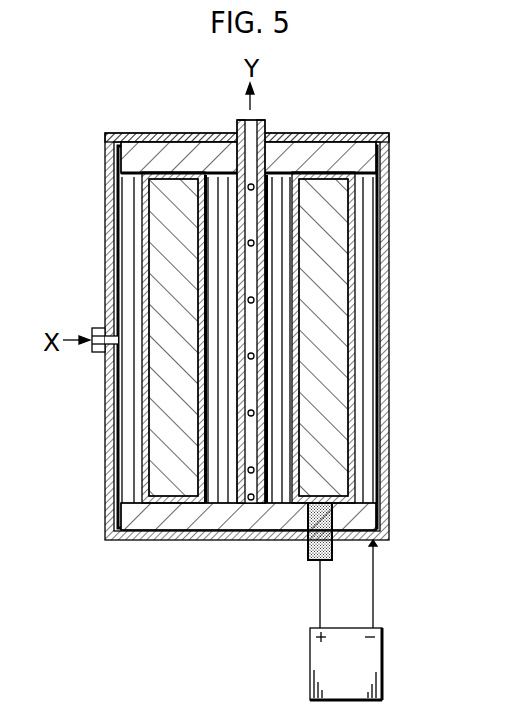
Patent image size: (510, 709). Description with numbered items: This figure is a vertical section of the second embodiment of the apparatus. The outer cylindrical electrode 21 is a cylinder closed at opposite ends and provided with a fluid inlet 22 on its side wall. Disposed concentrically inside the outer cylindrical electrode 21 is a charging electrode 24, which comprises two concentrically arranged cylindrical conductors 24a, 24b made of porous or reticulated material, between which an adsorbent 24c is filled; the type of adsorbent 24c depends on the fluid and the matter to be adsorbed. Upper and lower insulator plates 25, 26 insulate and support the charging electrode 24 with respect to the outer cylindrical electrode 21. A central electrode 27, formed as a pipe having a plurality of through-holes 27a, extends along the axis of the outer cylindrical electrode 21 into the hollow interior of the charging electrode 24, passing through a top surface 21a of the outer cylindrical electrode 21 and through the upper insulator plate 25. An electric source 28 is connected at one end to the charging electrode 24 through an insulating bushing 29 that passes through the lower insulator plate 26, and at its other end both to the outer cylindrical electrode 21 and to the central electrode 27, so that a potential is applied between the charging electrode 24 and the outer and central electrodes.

The outer cylindrical electrode 21 is at (390, 245).
The top surface 21a is at (300, 135).
The fluid inlet 22 is at (100, 329).
The charging electrode 24 is at (306, 337).
The cylindrical conductor 24a is at (348, 363).
The cylindrical conductor 24b is at (283, 398).
The adsorbent 24c is at (345, 437).
The upper insulator plate 25 is at (372, 163).
The lower insulator plate 26 is at (367, 513).
The central electrode 27 is at (238, 351).
The through-holes 27a is at (245, 413).
The electric source 28 is at (382, 657).
The insulating bushing 29 is at (308, 550).